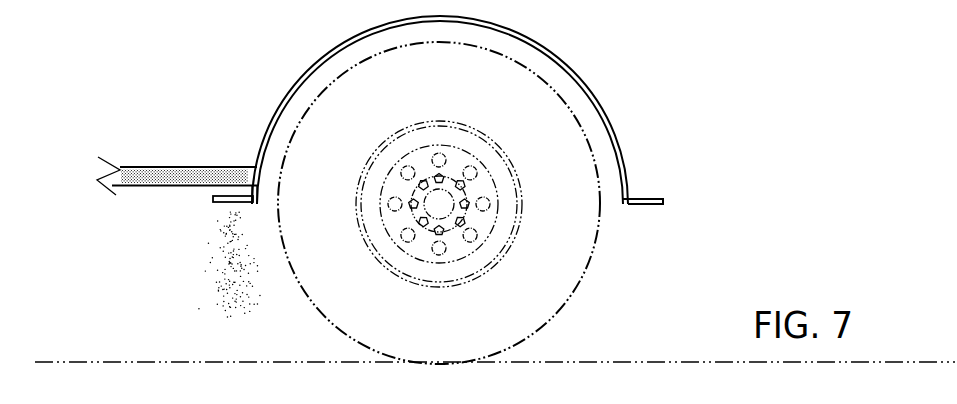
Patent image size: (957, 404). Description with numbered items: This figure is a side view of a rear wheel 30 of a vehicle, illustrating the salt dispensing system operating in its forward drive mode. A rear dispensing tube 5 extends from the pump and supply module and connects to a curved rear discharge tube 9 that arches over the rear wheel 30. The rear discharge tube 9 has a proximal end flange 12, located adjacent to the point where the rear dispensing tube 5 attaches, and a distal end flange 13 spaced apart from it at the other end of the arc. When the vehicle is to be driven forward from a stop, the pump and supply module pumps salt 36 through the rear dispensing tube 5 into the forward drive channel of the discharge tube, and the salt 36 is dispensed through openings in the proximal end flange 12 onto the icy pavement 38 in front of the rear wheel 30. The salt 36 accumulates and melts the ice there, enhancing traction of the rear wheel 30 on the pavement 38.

The rear dispensing tube 5 is at (198, 167).
The rear discharge tube 9 is at (570, 66).
The proximal end flange 12 is at (213, 199).
The distal end flange 13 is at (663, 202).
The rear wheel 30 is at (567, 267).
The salt 36 is at (145, 173).
The pavement 38 is at (62, 360).